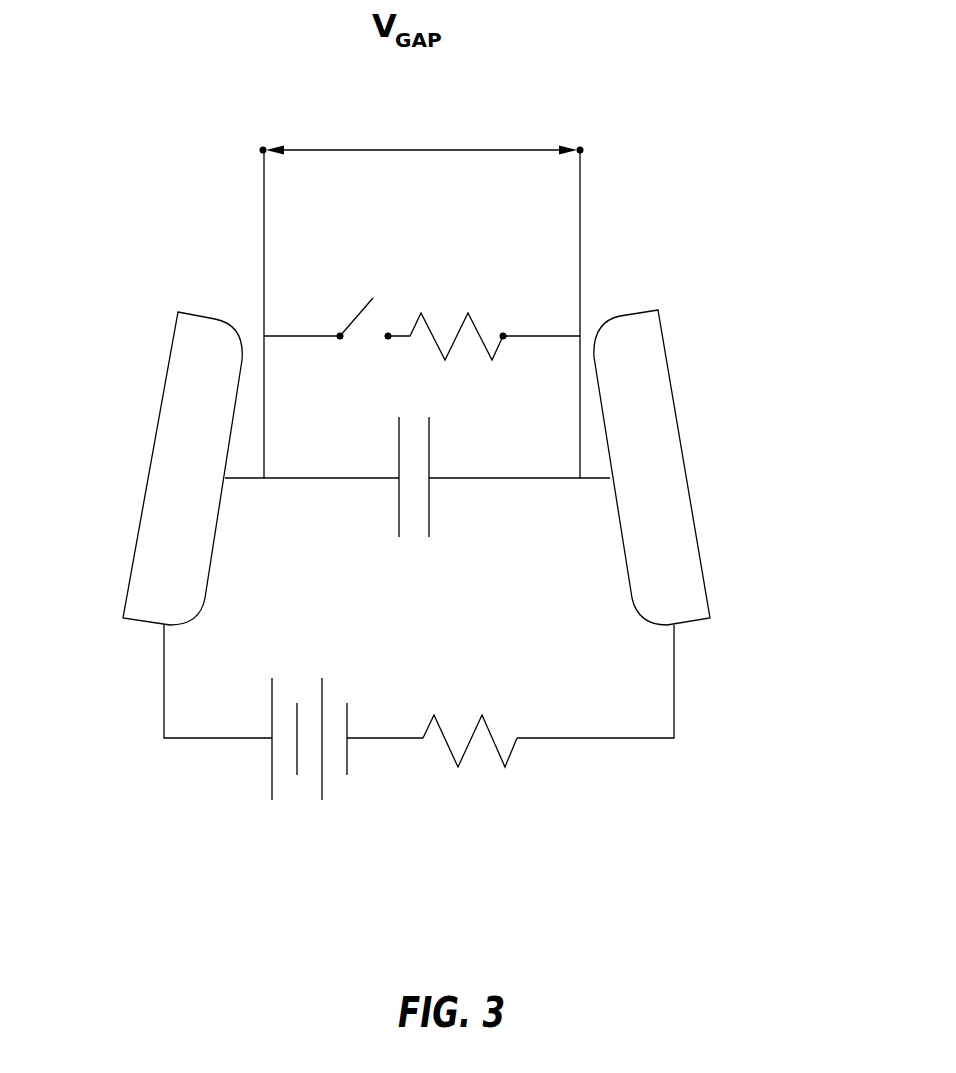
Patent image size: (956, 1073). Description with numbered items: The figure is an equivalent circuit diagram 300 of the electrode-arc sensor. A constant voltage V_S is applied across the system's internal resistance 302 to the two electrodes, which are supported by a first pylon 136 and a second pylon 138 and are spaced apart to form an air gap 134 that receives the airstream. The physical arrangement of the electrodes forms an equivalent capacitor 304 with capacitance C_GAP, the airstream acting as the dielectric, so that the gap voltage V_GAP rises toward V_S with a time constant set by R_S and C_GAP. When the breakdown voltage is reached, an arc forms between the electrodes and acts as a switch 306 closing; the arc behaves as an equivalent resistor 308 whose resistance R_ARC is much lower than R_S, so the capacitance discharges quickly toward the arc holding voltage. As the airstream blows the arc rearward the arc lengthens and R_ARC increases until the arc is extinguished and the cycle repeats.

The equivalent circuit diagram 300 is at (730, 186).
The internal resistance 302 is at (465, 745).
The equivalent capacitor 304 is at (430, 467).
The switch 306 is at (358, 320).
The equivalent resistor 308 is at (482, 335).
The air gap 134 is at (322, 783).
The first pylon 136 is at (685, 463).
The second pylon 138 is at (152, 467).